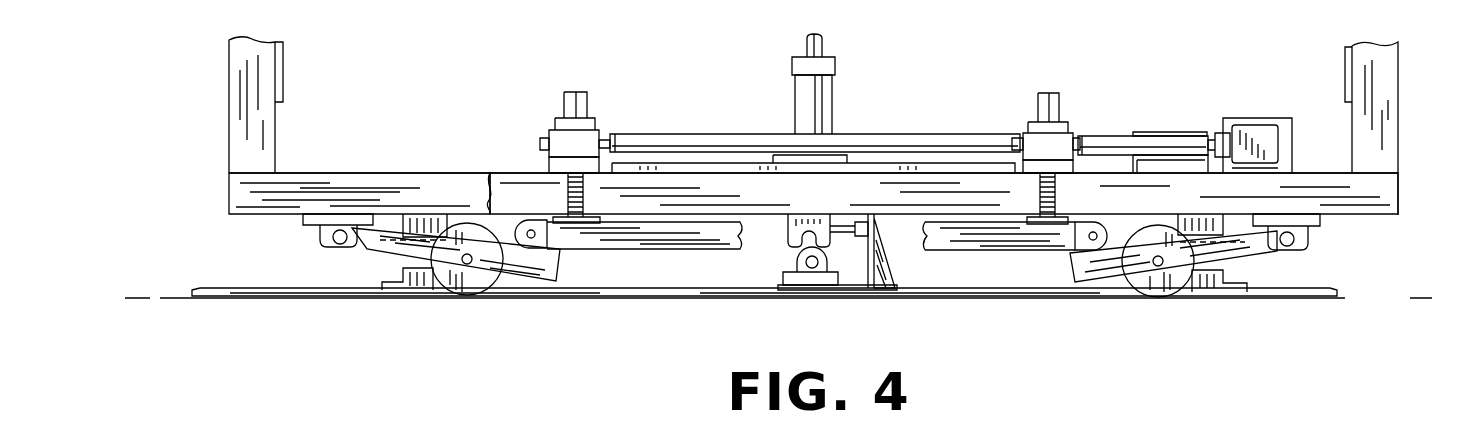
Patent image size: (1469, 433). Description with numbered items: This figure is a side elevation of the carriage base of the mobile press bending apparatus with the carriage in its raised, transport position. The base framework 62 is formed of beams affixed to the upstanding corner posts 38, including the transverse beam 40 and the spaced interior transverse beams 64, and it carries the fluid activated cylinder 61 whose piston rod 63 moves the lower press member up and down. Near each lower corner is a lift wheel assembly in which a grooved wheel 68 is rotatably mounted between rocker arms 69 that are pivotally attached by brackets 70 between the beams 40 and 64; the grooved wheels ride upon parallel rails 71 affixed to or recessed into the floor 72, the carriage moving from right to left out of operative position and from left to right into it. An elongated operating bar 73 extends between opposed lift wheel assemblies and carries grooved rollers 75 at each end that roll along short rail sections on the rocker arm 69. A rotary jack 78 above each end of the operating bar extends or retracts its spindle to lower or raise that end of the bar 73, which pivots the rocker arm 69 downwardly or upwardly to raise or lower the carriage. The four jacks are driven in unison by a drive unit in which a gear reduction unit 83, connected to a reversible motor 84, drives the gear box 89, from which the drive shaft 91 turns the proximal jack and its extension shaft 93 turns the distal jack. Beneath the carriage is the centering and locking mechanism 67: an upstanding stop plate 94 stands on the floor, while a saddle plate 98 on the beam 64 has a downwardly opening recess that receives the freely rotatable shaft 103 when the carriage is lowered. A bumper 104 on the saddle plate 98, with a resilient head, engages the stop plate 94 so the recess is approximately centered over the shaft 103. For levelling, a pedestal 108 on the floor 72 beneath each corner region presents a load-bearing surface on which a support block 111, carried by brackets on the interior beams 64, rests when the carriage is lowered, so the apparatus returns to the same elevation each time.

The corner post 38 is at (233, 100).
The transverse beam 40 is at (387, 183).
The base framework 62 is at (366, 166).
The interior transverse beam 64 is at (537, 180).
The fluid activated cylinder 61 is at (796, 92).
The piston rod 63 is at (822, 42).
The extension shaft 93 is at (908, 136).
The rotary jack 78 is at (558, 138).
The drive shaft 91 is at (1122, 140).
The reversible motor 84 is at (1177, 130).
The gear reduction unit 83 is at (1283, 118).
The gear box 89 is at (1272, 148).
The saddle plate 98 is at (793, 232).
The bumper 104 is at (862, 224).
The stop plate 94 is at (876, 250).
The rotatable shaft 103 is at (816, 268).
The centering and locking mechanism 67 is at (780, 259).
The operating bar 73 is at (662, 252).
The grooved roller 75 is at (517, 222).
The rocker arm 69 is at (528, 275).
The grooved wheel 68 is at (478, 290).
The pedestal 108 is at (412, 277).
The bracket 70 is at (313, 218).
The rail 71 is at (257, 290).
The floor 72 is at (170, 298).
The support block 111 is at (428, 214).